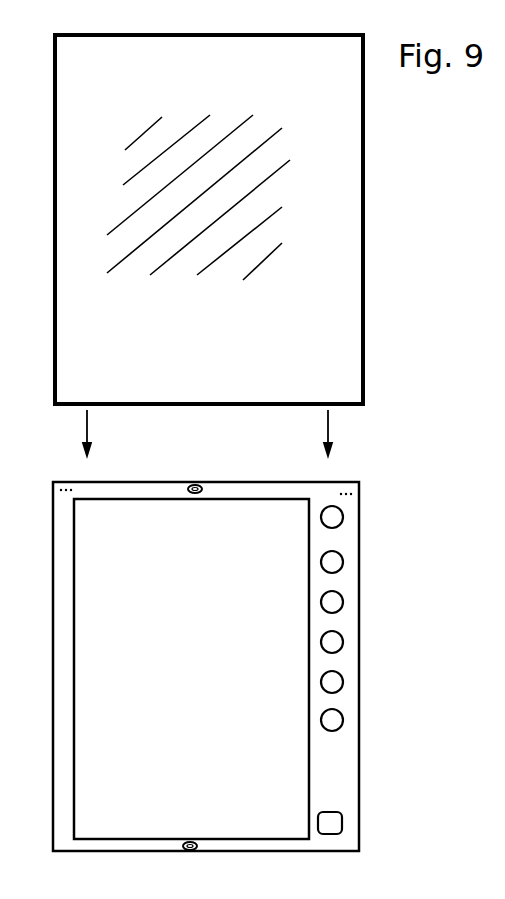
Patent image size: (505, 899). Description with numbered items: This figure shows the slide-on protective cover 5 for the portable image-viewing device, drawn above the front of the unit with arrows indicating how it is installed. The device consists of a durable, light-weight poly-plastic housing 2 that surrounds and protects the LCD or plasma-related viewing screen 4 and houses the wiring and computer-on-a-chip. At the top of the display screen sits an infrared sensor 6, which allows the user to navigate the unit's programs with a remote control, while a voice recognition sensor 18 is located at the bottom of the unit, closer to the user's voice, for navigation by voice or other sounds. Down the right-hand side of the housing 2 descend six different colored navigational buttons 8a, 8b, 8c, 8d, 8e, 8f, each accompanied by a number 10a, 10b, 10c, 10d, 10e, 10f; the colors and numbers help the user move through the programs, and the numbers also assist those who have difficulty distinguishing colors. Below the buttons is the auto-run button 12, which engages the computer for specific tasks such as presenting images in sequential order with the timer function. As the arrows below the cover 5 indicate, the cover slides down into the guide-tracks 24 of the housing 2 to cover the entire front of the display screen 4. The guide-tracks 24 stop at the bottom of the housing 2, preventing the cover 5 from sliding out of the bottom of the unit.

The housing 2 is at (70, 512).
The viewing screen 4 is at (100, 570).
The cover 5 is at (338, 67).
The infrared sensor 6 is at (198, 485).
The navigational button 8a is at (320, 517).
The navigational button 8b is at (320, 562).
The navigational button 8c is at (320, 602).
The navigational button 8d is at (320, 642).
The navigational button 8e is at (320, 682).
The navigational button 8f is at (320, 720).
The number 10a is at (362, 515).
The number 10b is at (362, 560).
The number 10c is at (362, 600).
The number 10d is at (362, 640).
The number 10e is at (362, 680).
The number 10f is at (362, 718).
The auto-run button 12 is at (345, 820).
The voice recognition sensor 18 is at (187, 852).
The guide-track 24 is at (62, 483).